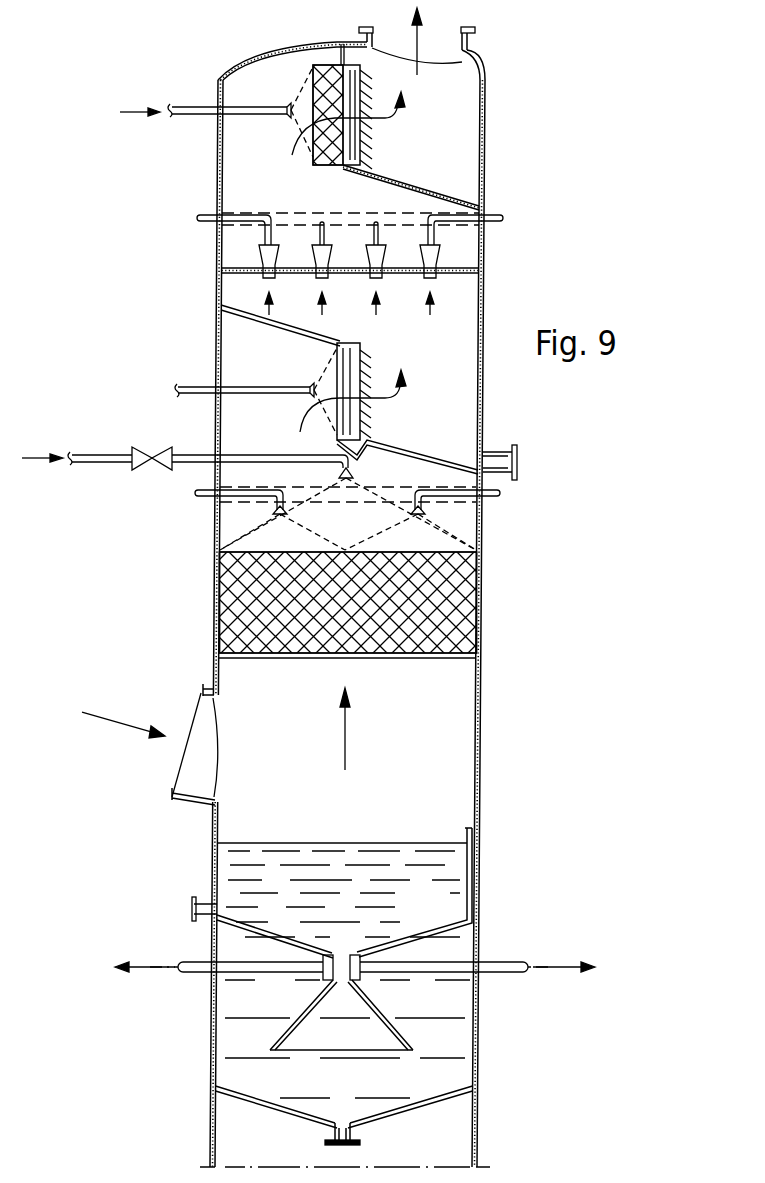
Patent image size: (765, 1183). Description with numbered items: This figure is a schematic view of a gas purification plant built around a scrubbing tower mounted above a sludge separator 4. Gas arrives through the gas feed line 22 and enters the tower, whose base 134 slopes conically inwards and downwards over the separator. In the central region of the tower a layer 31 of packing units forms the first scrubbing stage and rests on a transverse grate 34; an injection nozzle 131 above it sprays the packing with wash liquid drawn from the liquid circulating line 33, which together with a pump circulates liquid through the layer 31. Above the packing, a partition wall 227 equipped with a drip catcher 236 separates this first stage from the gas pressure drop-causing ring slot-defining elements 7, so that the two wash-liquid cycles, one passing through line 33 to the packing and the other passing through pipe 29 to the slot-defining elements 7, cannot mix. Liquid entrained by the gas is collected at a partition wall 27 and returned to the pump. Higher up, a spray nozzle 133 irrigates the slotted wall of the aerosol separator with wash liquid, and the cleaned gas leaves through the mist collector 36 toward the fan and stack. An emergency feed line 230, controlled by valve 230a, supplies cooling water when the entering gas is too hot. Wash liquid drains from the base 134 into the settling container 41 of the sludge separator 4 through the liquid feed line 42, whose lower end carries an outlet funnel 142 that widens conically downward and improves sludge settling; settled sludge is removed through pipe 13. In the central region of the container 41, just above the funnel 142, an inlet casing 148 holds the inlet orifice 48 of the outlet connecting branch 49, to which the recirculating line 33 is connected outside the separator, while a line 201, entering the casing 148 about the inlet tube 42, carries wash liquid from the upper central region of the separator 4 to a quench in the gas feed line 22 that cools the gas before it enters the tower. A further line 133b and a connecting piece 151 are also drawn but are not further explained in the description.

The sludge separator 4 is at (200, 1060).
The ring slot-defining elements 7 is at (275, 255).
The pipe 13 is at (355, 1133).
The gas feed line 22 is at (190, 778).
The partition wall 27 is at (453, 275).
The pipe 29 is at (270, 212).
The layer of packing units 31 is at (478, 578).
The liquid circulating line 33 is at (501, 494).
The transverse grate 34 is at (418, 659).
The mist collector 36 is at (355, 128).
The settling container 41 is at (361, 1080).
The liquid feed line 42 is at (345, 958).
The inlet orifice 48 is at (358, 980).
The outlet connecting branch 49 is at (501, 962).
The injection nozzle 131 is at (271, 512).
The spray nozzle 133 is at (288, 103).
The feed line 133b is at (188, 385).
The base 134 is at (428, 931).
The outlet funnel 142 is at (408, 1045).
The inlet casing 148 is at (320, 978).
The connection nozzle 151 is at (497, 457).
The line 201 is at (200, 960).
The partition wall 227 is at (434, 456).
The feed line 230 is at (263, 452).
The valve 230a is at (145, 450).
The drip catcher 236 is at (357, 368).